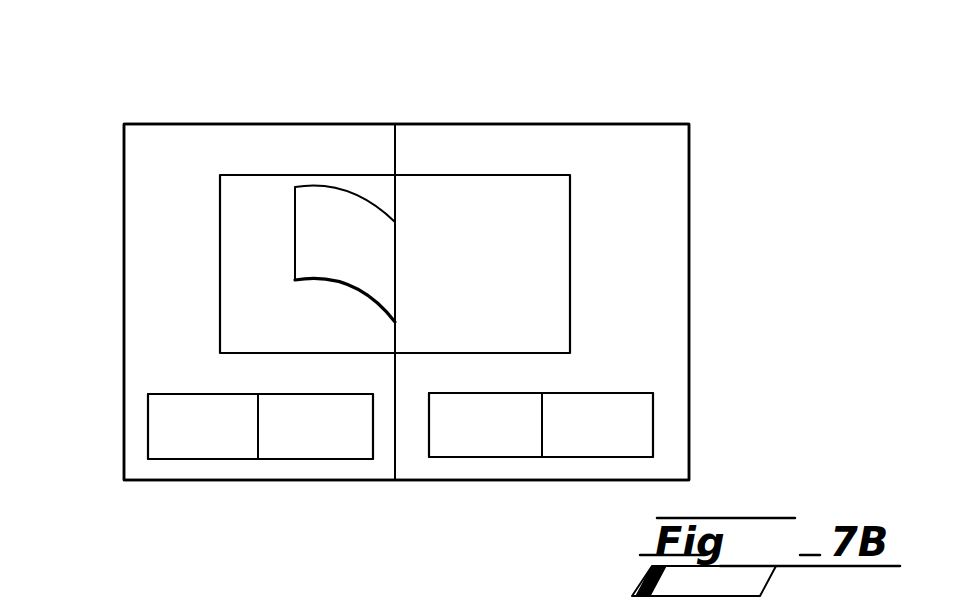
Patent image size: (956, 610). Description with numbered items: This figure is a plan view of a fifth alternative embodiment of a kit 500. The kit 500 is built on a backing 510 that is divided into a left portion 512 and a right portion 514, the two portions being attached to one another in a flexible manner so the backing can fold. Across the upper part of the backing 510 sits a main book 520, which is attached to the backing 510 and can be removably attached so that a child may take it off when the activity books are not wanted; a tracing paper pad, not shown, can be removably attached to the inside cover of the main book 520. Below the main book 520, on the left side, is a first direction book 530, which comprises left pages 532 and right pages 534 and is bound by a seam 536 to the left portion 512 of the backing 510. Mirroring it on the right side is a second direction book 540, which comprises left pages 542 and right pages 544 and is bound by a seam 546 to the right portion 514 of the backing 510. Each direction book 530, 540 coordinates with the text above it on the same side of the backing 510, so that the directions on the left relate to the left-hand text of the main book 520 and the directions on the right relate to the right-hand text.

The kit 500 is at (172, 104).
The backing 510 is at (148, 122).
The left portion 512 is at (303, 125).
The right portion 514 is at (507, 133).
The main book 520 is at (204, 262).
The first direction book 530 is at (148, 410).
The left pages 532 is at (172, 394).
The right pages 534 is at (352, 448).
The seam 536 is at (258, 440).
The second direction book 540 is at (654, 422).
The left pages 542 is at (478, 448).
The right pages 544 is at (610, 393).
The seam 546 is at (540, 440).